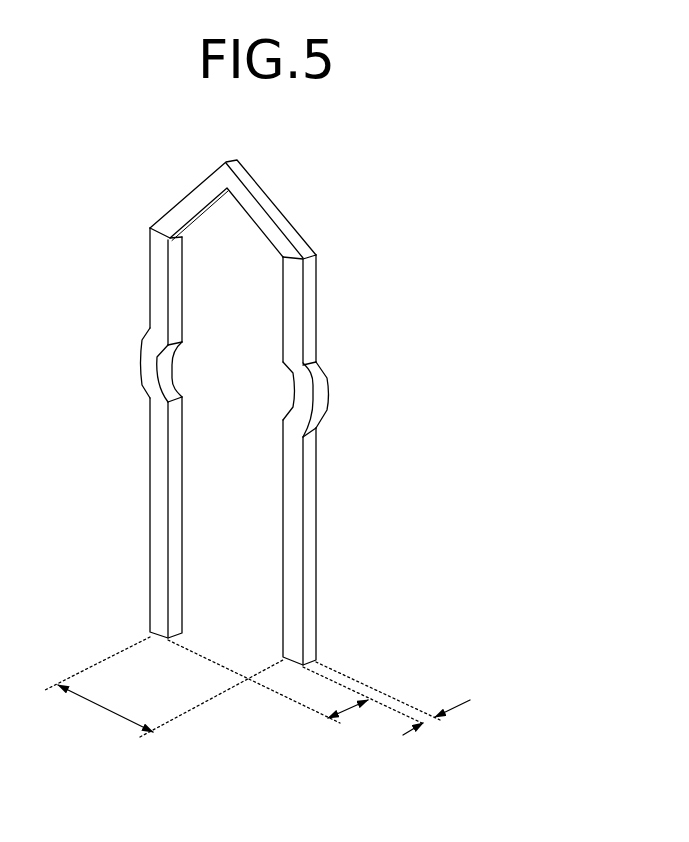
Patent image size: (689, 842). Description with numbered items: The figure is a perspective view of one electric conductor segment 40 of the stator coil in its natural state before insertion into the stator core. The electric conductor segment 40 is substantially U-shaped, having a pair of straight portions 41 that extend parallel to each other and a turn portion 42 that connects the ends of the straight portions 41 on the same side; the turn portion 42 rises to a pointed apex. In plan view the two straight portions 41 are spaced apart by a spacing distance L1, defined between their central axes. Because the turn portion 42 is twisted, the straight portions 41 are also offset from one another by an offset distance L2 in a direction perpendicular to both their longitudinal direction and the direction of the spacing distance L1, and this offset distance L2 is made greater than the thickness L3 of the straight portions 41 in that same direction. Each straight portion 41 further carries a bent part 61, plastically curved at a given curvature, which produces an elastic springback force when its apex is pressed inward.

The electric conductor segment 40 is at (234, 393).
The straight portions 41 is at (150, 529).
The turn portion 42 is at (264, 190).
The bent part 61 is at (140, 364).
The spacing distance L1 is at (105, 712).
The offset distance L2 is at (354, 719).
The thickness L3 is at (445, 720).